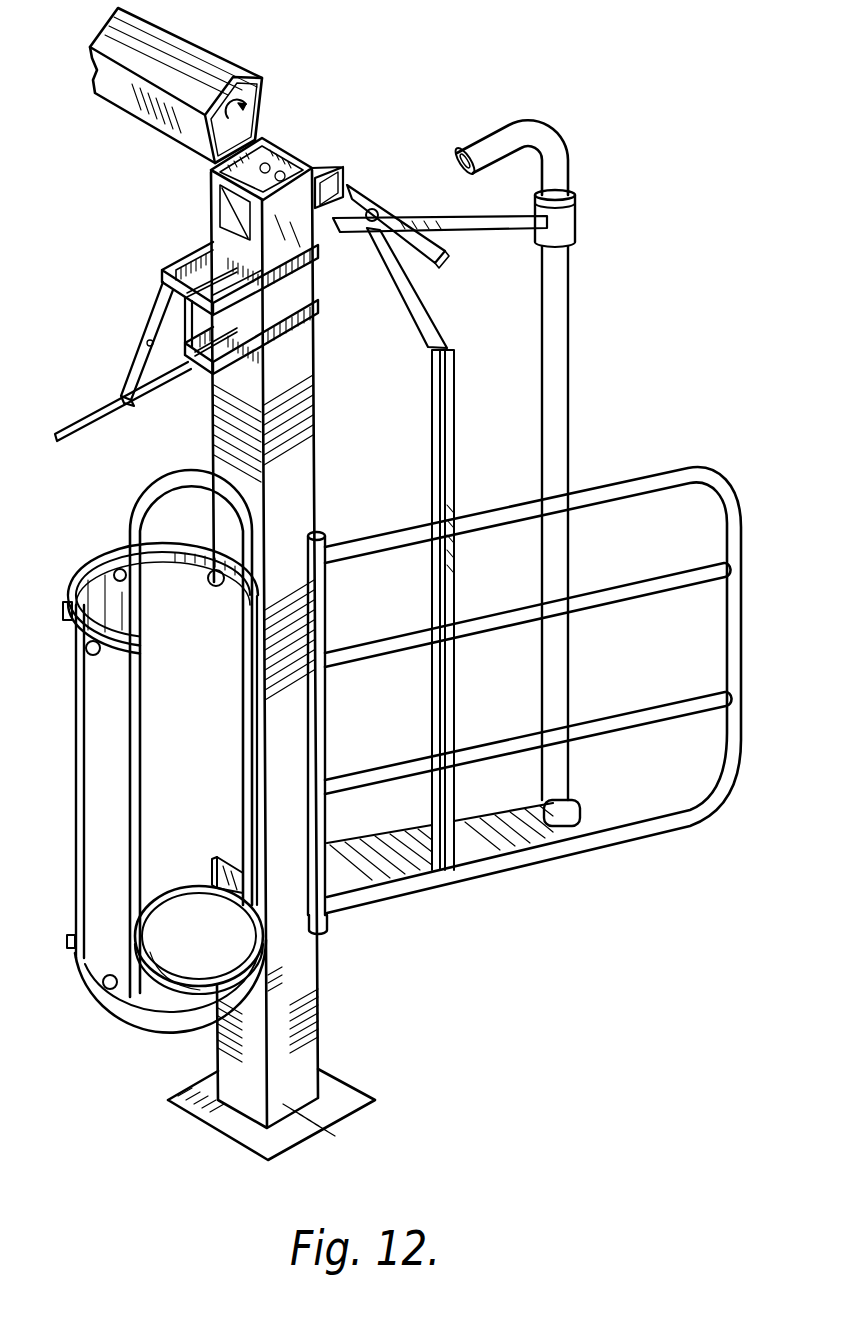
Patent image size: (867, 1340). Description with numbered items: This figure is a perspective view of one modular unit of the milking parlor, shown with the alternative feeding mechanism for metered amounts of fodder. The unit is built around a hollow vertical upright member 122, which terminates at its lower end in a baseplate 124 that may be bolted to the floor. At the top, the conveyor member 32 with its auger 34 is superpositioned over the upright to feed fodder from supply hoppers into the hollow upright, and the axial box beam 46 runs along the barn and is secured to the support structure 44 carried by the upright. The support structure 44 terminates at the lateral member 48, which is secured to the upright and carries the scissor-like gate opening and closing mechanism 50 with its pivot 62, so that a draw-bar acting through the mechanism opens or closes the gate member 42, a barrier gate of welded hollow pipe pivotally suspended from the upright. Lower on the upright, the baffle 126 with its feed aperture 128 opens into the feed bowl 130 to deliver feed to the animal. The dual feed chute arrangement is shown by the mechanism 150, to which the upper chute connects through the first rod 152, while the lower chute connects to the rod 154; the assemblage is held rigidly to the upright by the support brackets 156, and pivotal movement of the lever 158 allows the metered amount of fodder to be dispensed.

The conveyor member 32 is at (208, 42).
The auger 34 is at (262, 98).
The axial box beam 46 is at (308, 153).
The gate opening and closing mechanism 50 is at (377, 203).
The pivot 62 is at (380, 210).
The support structure 44 is at (557, 318).
The gate member 42 is at (660, 477).
The lateral member 48 is at (488, 843).
The vertical hollow upright member 122 is at (305, 450).
The baseplate 124 is at (345, 1098).
The feed bowl 130 is at (147, 1020).
The baffle 126 is at (240, 873).
The feed aperture 128 is at (217, 865).
The mechanism 150 is at (144, 313).
The first rod 152 is at (197, 270).
The rod 154 is at (207, 377).
The support brackets 156 is at (318, 303).
The lever 158 is at (128, 363).